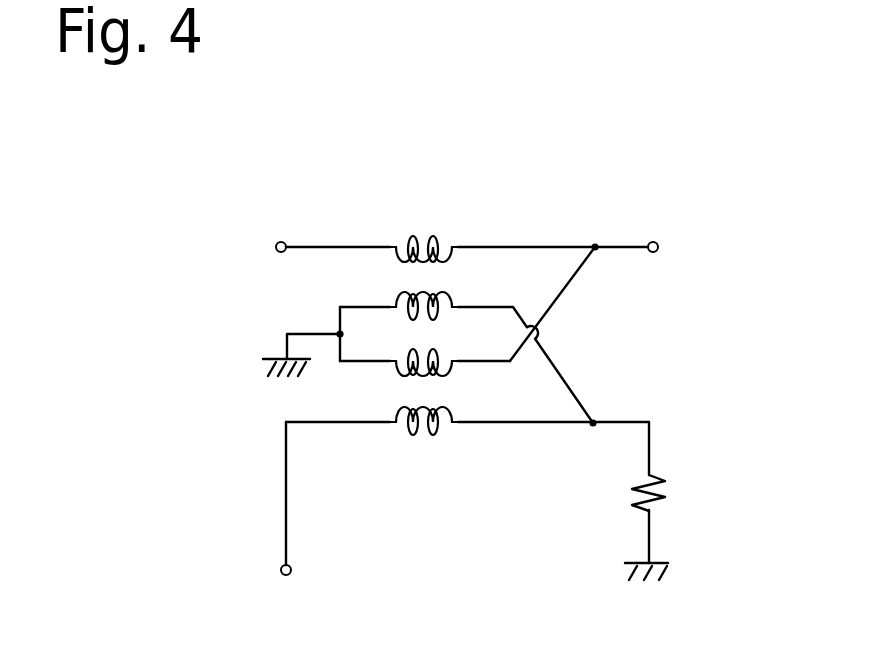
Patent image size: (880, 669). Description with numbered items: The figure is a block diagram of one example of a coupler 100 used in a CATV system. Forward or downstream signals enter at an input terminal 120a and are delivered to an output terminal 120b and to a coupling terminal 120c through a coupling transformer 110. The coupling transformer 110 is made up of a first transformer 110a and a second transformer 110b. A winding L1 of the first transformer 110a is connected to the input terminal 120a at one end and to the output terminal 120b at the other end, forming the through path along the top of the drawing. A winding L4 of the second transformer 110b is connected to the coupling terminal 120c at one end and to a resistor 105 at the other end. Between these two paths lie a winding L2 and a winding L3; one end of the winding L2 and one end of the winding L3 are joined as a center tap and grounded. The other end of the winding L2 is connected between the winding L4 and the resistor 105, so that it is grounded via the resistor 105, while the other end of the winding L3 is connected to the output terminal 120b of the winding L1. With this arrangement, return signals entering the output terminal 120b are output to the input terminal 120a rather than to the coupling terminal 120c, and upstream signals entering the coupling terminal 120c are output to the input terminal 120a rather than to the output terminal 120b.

The coupler 100 is at (619, 136).
The resistor 105 is at (660, 476).
The coupling transformer 110 is at (387, 308).
The first transformer 110a is at (387, 254).
The second transformer 110b is at (387, 416).
The input terminal 120a is at (280, 242).
The output terminal 120b is at (654, 242).
The coupling terminal 120c is at (282, 566).
The winding L1 is at (440, 243).
The winding L2 is at (453, 295).
The winding L3 is at (450, 373).
The winding L4 is at (437, 431).